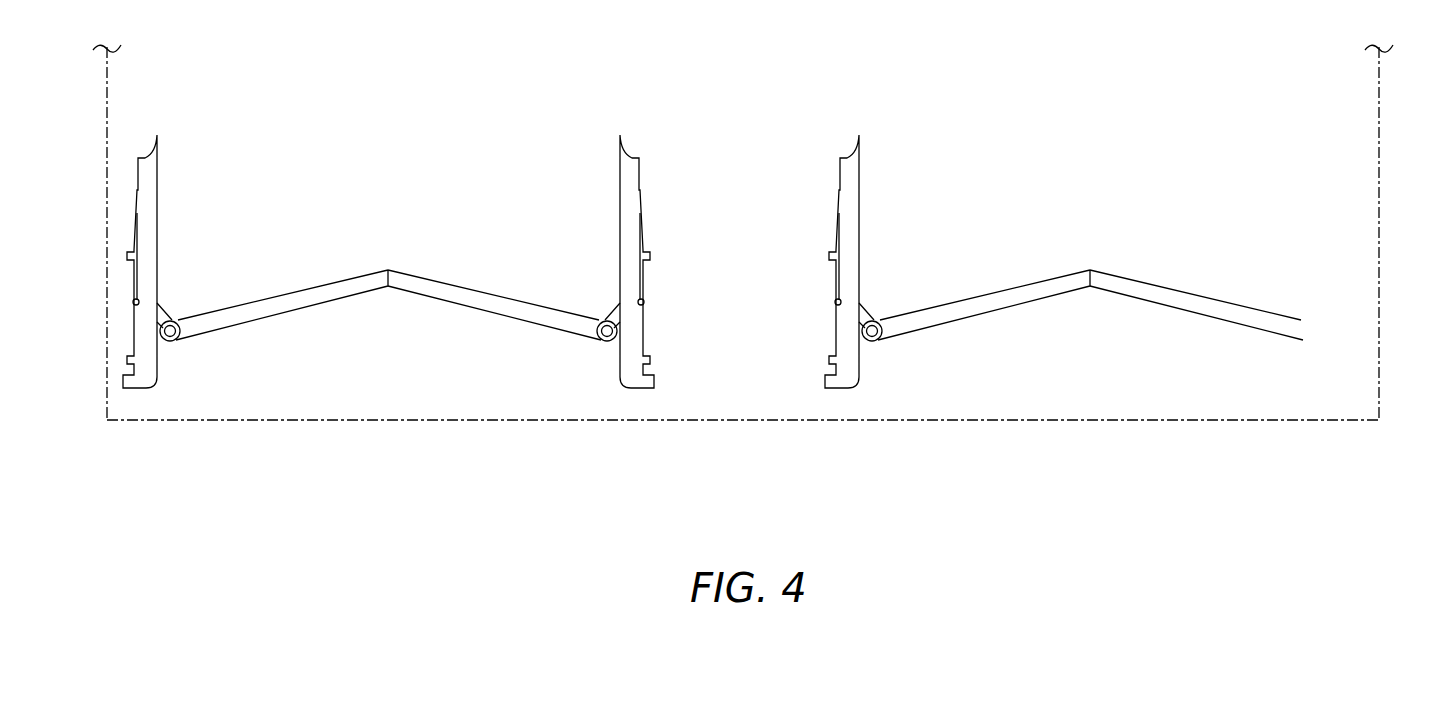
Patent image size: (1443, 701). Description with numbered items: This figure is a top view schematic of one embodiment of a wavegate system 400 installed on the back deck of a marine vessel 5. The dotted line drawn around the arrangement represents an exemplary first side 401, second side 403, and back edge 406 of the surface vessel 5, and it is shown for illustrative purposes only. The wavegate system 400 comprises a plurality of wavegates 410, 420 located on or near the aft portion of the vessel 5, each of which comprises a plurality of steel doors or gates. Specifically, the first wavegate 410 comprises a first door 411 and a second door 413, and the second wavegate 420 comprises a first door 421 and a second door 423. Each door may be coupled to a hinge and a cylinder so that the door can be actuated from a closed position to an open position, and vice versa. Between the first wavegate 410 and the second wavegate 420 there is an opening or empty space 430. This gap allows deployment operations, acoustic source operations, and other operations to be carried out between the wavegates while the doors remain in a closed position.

The wavegate system 400 is at (750, 291).
The first side 401 is at (107, 112).
The second side 403 is at (1379, 146).
The back edge 406 is at (585, 421).
The vessel 5 is at (402, 408).
The first wavegate 410 is at (387, 303).
The first door 411 is at (290, 302).
The second door 413 is at (476, 302).
The second wavegate 420 is at (1134, 307).
The first door 421 is at (996, 302).
The second door 423 is at (1182, 302).
The opening or empty space 430 is at (736, 381).